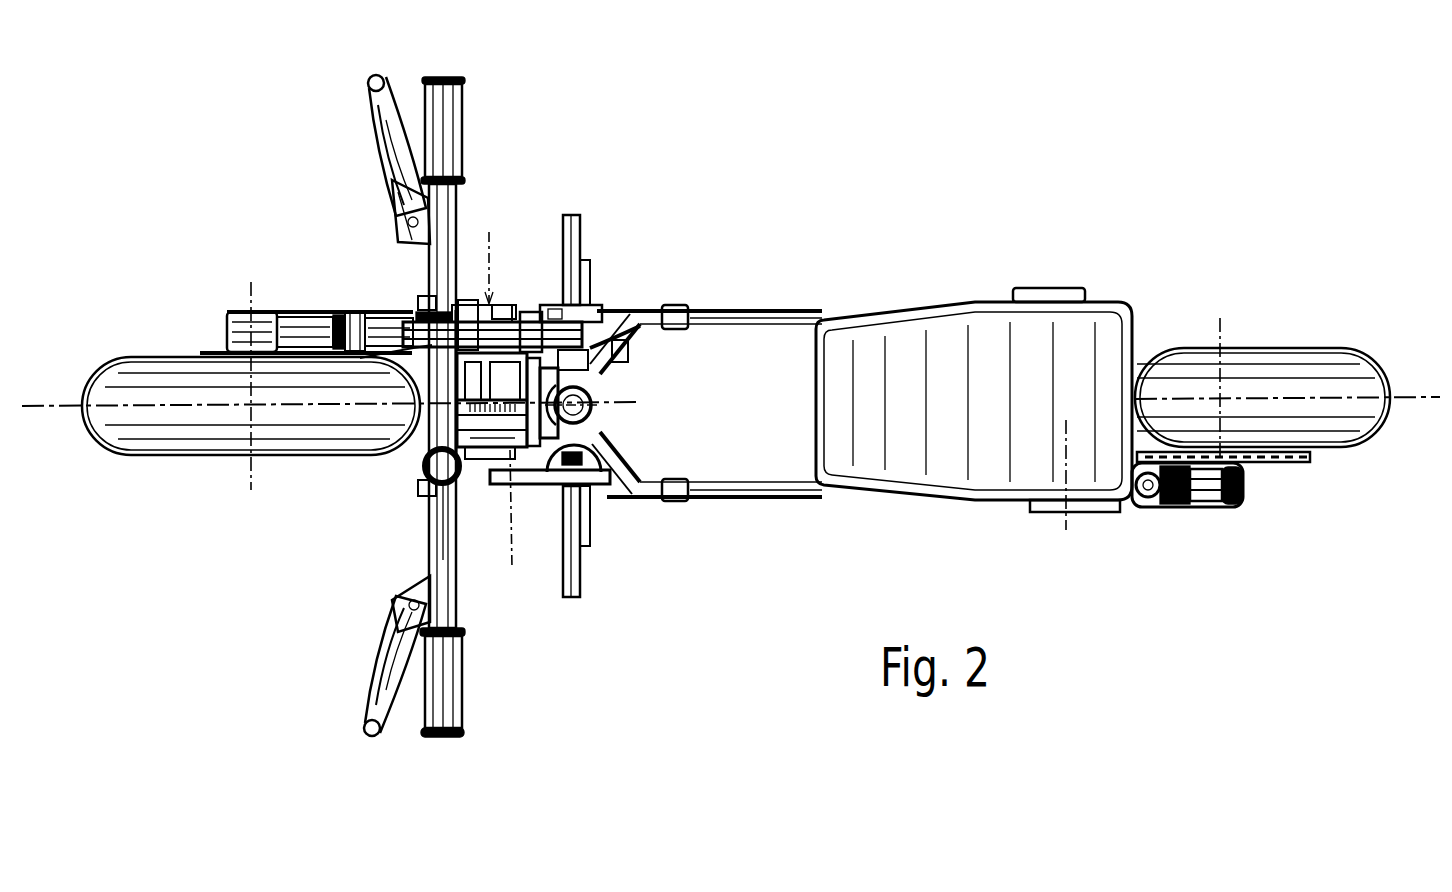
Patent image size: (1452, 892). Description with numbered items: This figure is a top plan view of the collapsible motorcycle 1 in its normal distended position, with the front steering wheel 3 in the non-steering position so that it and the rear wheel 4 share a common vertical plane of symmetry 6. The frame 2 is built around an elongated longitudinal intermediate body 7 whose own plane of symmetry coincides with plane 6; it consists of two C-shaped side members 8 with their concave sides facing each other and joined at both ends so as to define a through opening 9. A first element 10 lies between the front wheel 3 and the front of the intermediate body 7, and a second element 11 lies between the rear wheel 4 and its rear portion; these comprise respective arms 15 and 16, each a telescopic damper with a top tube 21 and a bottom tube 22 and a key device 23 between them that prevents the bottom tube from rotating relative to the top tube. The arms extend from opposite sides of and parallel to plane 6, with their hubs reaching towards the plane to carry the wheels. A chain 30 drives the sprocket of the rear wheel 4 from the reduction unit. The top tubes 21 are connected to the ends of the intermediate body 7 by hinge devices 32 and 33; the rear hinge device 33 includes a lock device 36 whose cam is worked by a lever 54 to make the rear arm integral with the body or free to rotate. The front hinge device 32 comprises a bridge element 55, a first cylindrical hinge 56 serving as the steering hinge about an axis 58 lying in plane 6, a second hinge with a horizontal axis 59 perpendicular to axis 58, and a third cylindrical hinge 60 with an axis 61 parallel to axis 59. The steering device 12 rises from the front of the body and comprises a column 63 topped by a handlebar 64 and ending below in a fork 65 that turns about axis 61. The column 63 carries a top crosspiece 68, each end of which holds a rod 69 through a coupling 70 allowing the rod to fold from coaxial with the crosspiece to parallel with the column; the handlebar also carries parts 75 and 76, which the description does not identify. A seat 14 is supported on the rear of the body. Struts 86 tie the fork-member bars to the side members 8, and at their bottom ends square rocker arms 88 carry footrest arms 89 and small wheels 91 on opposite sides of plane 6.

The collapsible motorcycle 1 is at (832, 242).
The frame 2 is at (698, 540).
The front steering wheel 3 is at (140, 375).
The rear wheel 4 is at (1332, 362).
The vertical plane of symmetry 6 is at (57, 398).
The intermediate body 7 is at (760, 318).
The side members 8 is at (796, 312).
The through opening 9 is at (735, 350).
The first element 10 is at (326, 292).
The second element 11 is at (1166, 520).
The steering device 12 is at (470, 292).
The seat 14 is at (1100, 300).
The arm 15 is at (386, 314).
The arm 16 is at (1188, 512).
The top tube 21 is at (405, 348).
The bottom tube 22 is at (226, 318).
The key device 23 is at (292, 312).
The chain 30 is at (1300, 470).
The hinge device 32 is at (540, 350).
The hinge device 33 is at (1040, 520).
The lock device 36 is at (476, 300).
The lever 54 is at (463, 272).
The bridge element 55 is at (552, 342).
The first cylindrical hinge 56 is at (594, 398).
The axis 58 is at (603, 406).
The axis 59 is at (525, 276).
The third cylindrical hinge 60 is at (418, 470).
The axis 61 is at (525, 525).
The column 63 is at (474, 472).
The handlebar 64 is at (426, 548).
The fork 65 is at (514, 500).
The top crosspiece 68 is at (428, 362).
The rod 69 is at (396, 212).
The coupling 70 is at (422, 296).
The handlebar grip 75 is at (447, 105).
The brake lever 76 is at (383, 80).
The strut 86 is at (562, 322).
The square rocker arm 88 is at (592, 266).
The arm 89 is at (578, 222).
The wheels 91 is at (600, 366).